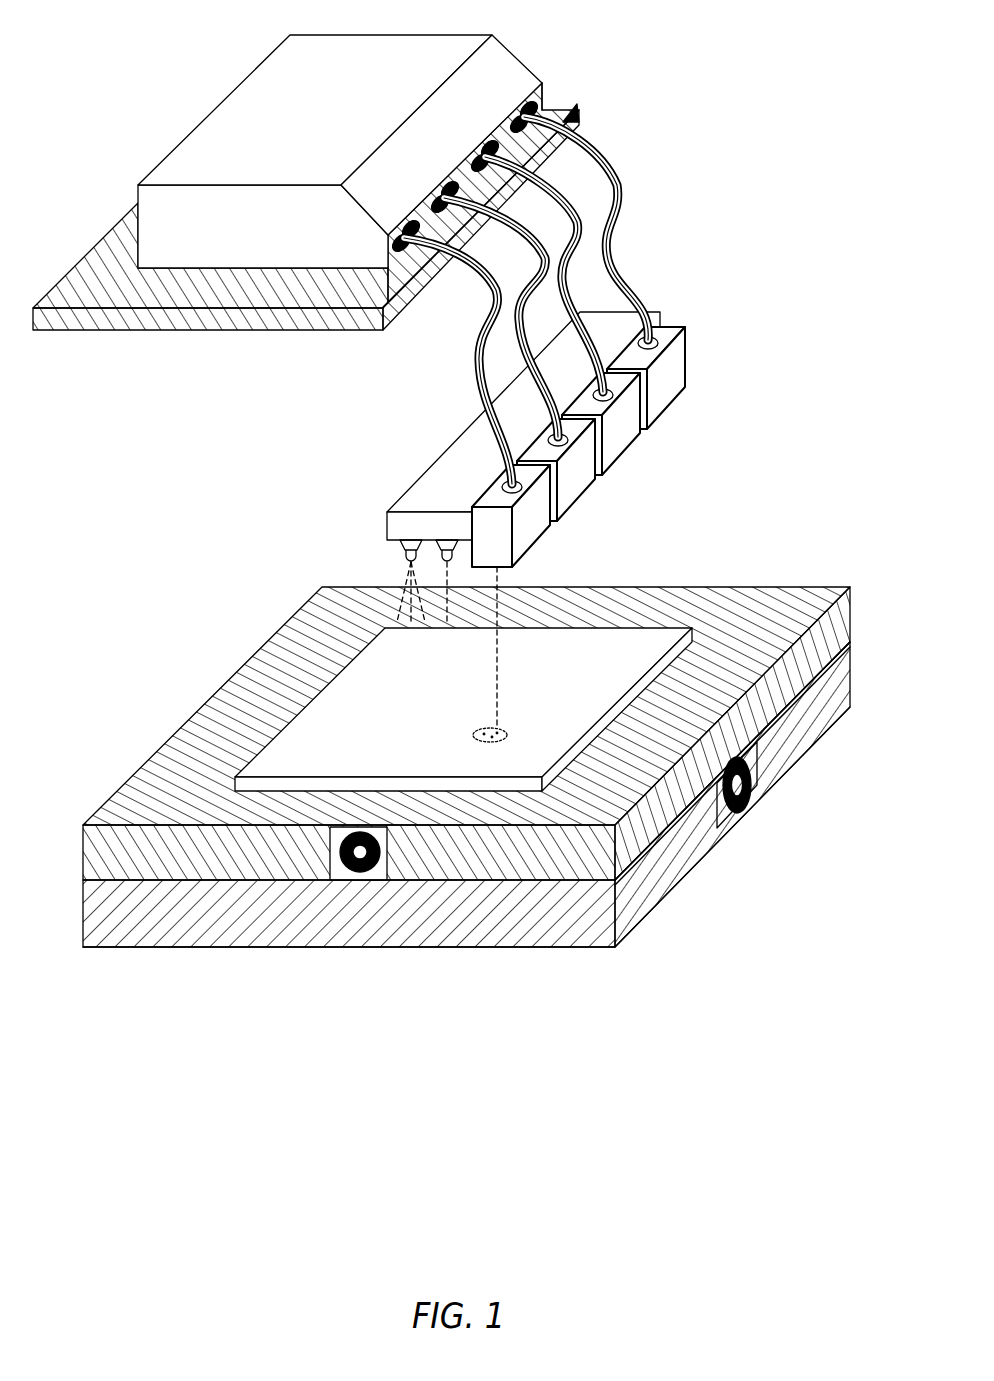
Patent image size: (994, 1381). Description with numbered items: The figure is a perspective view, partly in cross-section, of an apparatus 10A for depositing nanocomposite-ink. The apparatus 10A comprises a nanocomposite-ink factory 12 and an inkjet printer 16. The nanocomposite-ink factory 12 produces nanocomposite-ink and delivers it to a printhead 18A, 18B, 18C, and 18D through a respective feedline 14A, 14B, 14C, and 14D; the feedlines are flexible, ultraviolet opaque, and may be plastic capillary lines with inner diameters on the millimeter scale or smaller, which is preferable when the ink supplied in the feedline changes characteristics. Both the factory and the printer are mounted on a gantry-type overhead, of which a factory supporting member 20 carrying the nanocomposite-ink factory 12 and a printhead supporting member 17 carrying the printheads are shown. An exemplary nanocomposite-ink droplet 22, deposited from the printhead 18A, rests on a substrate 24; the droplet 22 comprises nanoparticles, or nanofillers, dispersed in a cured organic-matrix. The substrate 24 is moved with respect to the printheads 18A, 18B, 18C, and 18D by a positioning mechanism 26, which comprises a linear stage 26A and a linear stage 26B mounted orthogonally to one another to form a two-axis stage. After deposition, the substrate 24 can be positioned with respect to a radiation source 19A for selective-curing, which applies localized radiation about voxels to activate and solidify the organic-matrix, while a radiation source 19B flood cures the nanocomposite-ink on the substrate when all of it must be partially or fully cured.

The apparatus 10A is at (620, 1070).
The nanocomposite-ink factory 12 is at (203, 104).
The feedline 14A is at (481, 347).
The feedline 14B is at (527, 298).
The feedline 14C is at (565, 247).
The feedline 14D is at (602, 203).
The inkjet printer 16 is at (408, 475).
The printhead supporting member 17 is at (451, 444).
The printhead 18A is at (537, 540).
The printhead 18B is at (580, 500).
The printhead 18C is at (627, 453).
The printhead 18D is at (672, 397).
The radiation source 19A is at (440, 541).
The radiation source 19B is at (400, 549).
The factory supporting member 20 is at (95, 332).
The nanocomposite-ink droplet 22 is at (520, 735).
The substrate 24 is at (245, 764).
The positioning mechanism 26 is at (228, 662).
The linear stage 26A is at (120, 785).
The linear stage 26B is at (690, 868).